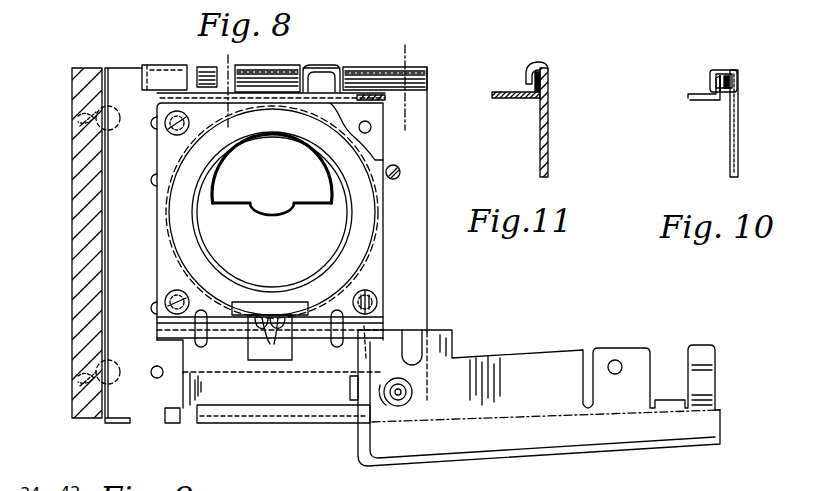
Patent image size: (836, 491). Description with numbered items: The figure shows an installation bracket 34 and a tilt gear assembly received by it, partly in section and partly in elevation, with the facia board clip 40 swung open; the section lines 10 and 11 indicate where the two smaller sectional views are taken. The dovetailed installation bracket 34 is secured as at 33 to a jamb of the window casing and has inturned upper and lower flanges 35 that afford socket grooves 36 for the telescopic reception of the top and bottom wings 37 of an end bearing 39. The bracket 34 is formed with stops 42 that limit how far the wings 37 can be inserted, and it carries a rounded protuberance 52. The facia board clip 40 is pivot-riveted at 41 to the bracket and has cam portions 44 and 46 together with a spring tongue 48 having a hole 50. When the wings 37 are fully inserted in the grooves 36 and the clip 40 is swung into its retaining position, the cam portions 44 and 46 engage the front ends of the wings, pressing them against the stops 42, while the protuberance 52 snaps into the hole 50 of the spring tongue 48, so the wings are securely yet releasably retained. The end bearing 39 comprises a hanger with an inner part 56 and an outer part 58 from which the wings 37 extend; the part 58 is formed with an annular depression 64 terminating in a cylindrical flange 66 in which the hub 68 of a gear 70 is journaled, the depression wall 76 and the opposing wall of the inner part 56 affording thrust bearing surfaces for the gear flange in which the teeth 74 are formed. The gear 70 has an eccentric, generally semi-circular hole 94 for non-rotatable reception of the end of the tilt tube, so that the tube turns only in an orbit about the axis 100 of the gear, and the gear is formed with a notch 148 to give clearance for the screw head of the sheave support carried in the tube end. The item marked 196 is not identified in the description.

In FIG. 8, the section line 10— 10 is at (405, 48).
In FIG. 8, the section line 11— 11 is at (219, 53).
In FIG. 8, the securing points 33 is at (75, 112).
In FIG. 8, the installation bracket 34 is at (121, 60).
In FIG. 11, the installation bracket 34 is at (554, 142).
In FIG. 10, the installation bracket 34 is at (744, 146).
In FIG. 8, the inturned upper and lower flanges 35 is at (283, 82).
In FIG. 10, the inturned upper and lower flanges 35 is at (712, 80).
In FIG. 8, the socket grooves 36 is at (378, 63).
In FIG. 10, the socket grooves 36 is at (738, 87).
In FIG. 8, the top and bottom wings 37 is at (312, 78).
In FIG. 11, the top and bottom wings 37 is at (531, 88).
In FIG. 10, the top and bottom wings 37 is at (737, 80).
In FIG. 8, the end bearing 39 is at (398, 233).
In FIG. 8, the facia board clip 40 is at (594, 458).
In FIG. 8, the pivot rivet 41 is at (412, 392).
In FIG. 8, the stops 42 is at (187, 65).
In FIG. 11, the stops 42 is at (525, 80).
In FIG. 8, the cam portion 44 is at (718, 384).
In FIG. 8, the cam portion 46 is at (420, 343).
In FIG. 8, the spring tongue 48 is at (637, 375).
In FIG. 10, the spring tongue 48 is at (722, 75).
In FIG. 8, the hole 50 is at (617, 360).
In FIG. 8, the rounded protuberance 52 is at (400, 172).
In FIG. 8, the inner part 56 is at (390, 263).
In FIG. 11, the inner part 56 is at (498, 105).
In FIG. 8, the outer part 58 is at (397, 140).
In FIG. 8, the annular depression 64 is at (363, 270).
In FIG. 8, the cylindrical flange 66 is at (342, 250).
In FIG. 8, the hub 68 is at (200, 223).
In FIG. 8, the gear 70 is at (199, 257).
In FIG. 8, the teeth 74 is at (270, 331).
In FIG. 8, the depression wall 76 is at (186, 165).
In FIG. 8, the eccentric hole 94 is at (237, 205).
In FIG. 8, the axis 100 is at (275, 223).
In FIG. 8, the notch 148 is at (255, 212).
In FIG. 8, the hole 196 is at (178, 378).